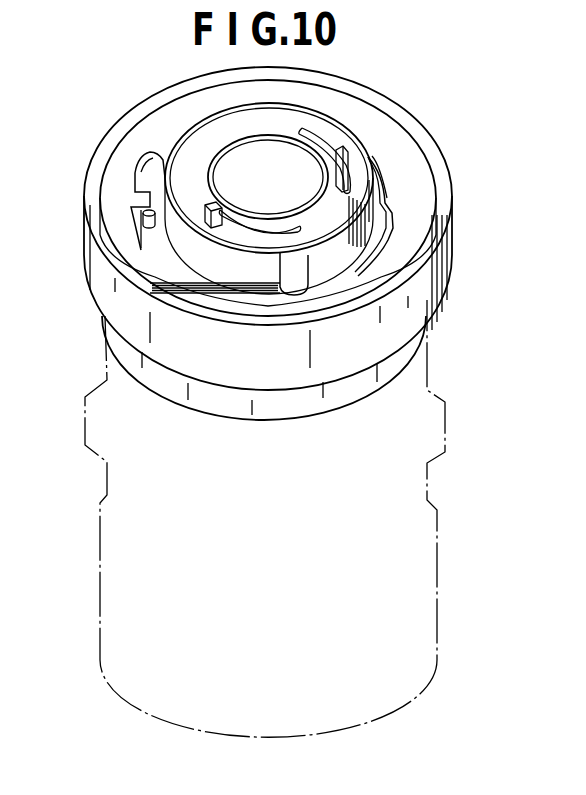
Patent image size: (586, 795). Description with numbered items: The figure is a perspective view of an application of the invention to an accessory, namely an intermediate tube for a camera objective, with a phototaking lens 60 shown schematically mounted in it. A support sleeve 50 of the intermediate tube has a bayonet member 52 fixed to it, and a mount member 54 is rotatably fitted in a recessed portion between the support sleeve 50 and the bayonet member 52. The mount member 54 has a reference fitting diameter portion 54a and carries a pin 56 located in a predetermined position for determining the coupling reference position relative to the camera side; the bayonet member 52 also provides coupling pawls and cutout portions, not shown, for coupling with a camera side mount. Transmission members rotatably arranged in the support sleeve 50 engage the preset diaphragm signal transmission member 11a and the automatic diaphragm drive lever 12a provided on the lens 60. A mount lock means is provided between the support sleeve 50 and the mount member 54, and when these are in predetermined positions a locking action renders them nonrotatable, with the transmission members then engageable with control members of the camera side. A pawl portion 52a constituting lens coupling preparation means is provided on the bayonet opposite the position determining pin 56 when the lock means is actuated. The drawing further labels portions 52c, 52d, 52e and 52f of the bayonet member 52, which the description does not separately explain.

The support sleeve 50 is at (432, 153).
The bayonet member 52 is at (375, 123).
The pawl portion 52a is at (141, 198).
The guide portion 52c is at (387, 198).
The annular floor 52d is at (218, 282).
The tab lower portion 52e is at (141, 241).
The boss side wall 52f is at (340, 262).
The mount member 54 is at (385, 262).
The reference fitting diameter portion 54a is at (297, 296).
The pin 56 is at (145, 219).
The automatic diaphragm drive lever 12a is at (333, 158).
The preset diaphragm signal transmission member 11a is at (218, 205).
The phototaking lens 60 is at (415, 575).